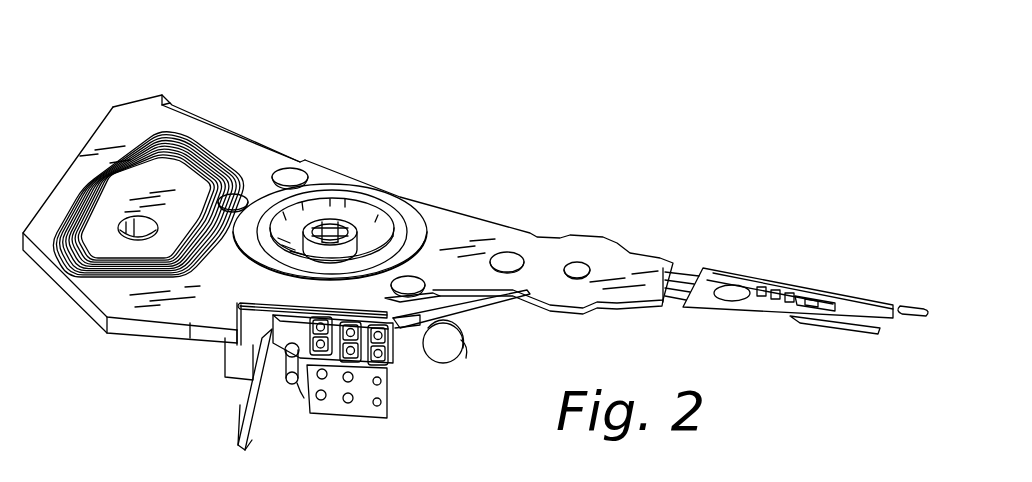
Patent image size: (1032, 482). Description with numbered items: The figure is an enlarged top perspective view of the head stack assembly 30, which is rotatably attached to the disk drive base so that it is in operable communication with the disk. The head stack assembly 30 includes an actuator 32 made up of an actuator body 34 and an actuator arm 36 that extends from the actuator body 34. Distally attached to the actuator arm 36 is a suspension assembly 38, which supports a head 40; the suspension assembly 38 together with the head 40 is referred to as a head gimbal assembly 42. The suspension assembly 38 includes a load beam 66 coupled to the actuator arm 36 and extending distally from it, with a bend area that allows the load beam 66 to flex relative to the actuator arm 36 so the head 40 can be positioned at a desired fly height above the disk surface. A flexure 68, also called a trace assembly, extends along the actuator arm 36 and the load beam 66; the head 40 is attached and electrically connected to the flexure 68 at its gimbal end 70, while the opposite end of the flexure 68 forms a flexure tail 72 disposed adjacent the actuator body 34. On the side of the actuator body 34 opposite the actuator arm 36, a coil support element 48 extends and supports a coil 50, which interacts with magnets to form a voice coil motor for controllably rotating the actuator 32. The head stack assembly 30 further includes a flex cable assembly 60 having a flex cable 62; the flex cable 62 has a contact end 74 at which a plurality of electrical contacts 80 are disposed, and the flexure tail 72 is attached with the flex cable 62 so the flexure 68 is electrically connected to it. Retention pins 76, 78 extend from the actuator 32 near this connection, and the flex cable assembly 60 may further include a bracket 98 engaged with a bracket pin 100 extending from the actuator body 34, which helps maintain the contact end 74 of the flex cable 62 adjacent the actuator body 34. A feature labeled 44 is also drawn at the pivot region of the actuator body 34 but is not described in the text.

The head stack assembly 30 is at (239, 76).
The actuator 32 is at (298, 164).
The actuator body 34 is at (322, 167).
The actuator arm 36 is at (467, 221).
The suspension assembly 38 is at (787, 282).
The head 40 is at (868, 328).
The head gimbal assembly 42 is at (790, 276).
The pivot bearing bore 44 is at (363, 230).
The coil support element 48 is at (75, 167).
The coil 50 is at (127, 152).
The flex cable assembly 60 is at (250, 424).
The flex cable 62 is at (262, 432).
The load beam 66 is at (715, 275).
The flexure 68 is at (467, 303).
The gimbal end 70 is at (808, 325).
The flexure tail 72 is at (398, 365).
The contact end 74 is at (341, 405).
The retention pin 76 is at (302, 386).
The retention pin 78 is at (291, 386).
The electrical contacts 80 is at (353, 401).
The bracket 98 is at (404, 353).
The bracket pin 100 is at (446, 362).